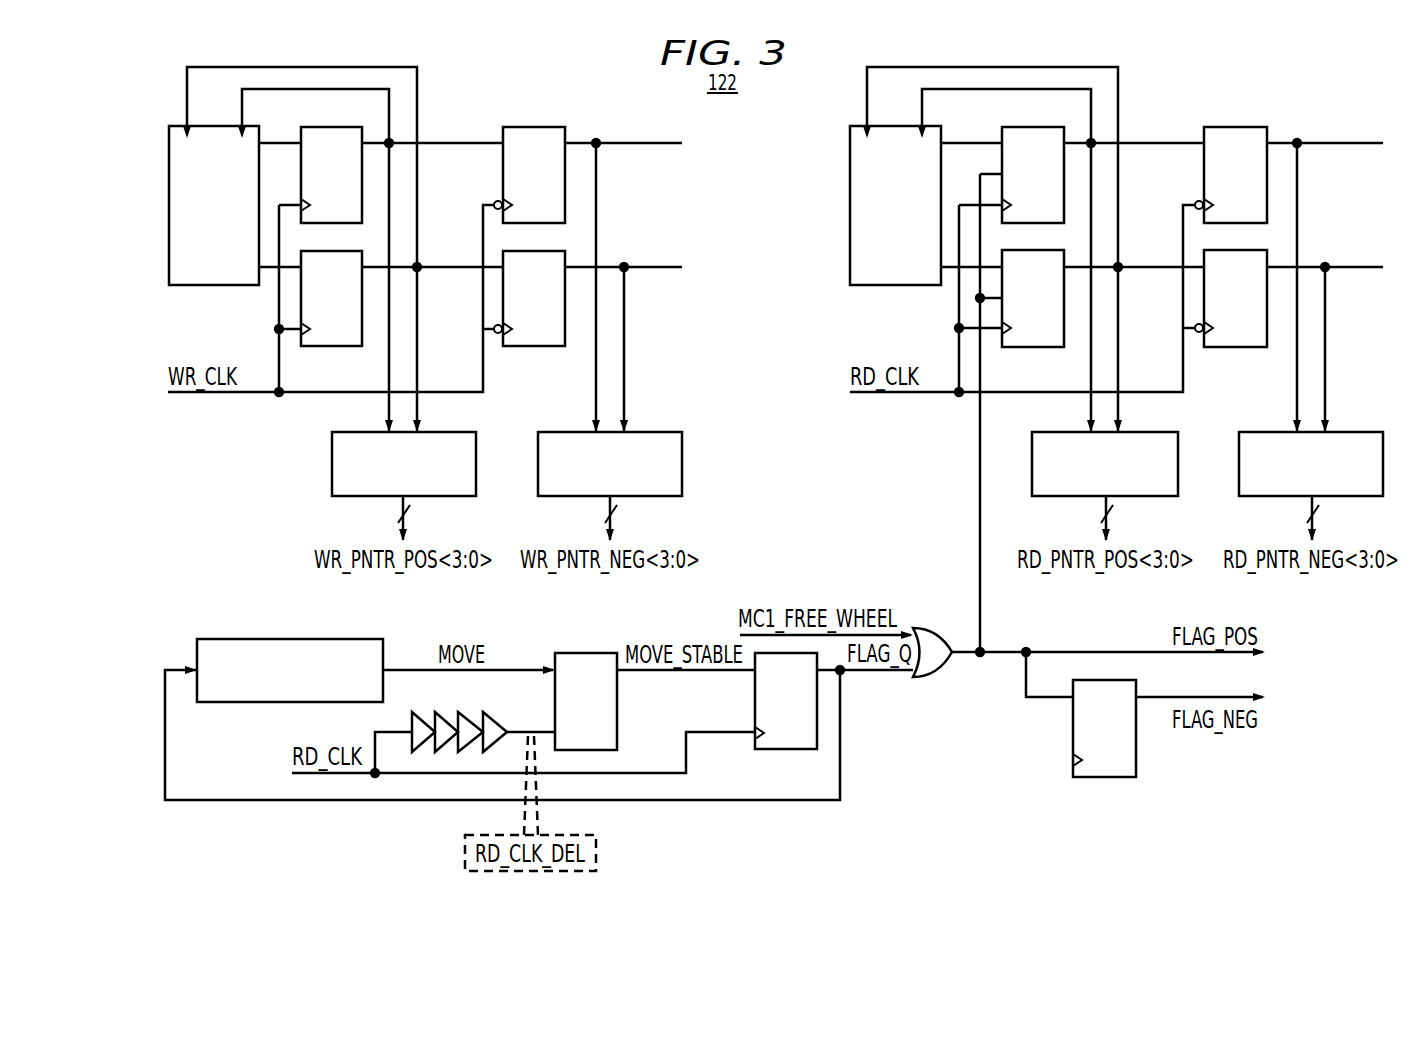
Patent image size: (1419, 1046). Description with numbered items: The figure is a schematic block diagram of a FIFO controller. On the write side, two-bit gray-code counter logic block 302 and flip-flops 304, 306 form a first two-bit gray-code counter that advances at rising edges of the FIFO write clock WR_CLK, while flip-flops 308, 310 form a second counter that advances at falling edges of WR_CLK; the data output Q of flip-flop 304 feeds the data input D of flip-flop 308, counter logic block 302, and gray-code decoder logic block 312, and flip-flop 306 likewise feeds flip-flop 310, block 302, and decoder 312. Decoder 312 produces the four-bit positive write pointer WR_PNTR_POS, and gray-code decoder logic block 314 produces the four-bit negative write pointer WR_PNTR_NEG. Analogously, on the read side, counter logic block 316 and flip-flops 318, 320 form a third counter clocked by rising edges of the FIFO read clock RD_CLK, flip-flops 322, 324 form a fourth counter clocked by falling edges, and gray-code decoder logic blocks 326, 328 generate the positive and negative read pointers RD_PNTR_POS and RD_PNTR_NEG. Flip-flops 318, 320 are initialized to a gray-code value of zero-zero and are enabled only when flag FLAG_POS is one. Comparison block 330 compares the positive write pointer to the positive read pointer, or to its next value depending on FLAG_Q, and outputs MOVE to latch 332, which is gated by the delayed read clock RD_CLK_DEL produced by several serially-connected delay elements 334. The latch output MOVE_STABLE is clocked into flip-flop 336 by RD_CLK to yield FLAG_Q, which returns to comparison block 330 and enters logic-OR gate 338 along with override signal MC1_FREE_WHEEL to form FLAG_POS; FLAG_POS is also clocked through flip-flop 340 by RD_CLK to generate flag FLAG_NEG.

The 2-bit gray-code counter logic block 302 is at (213, 125).
The flip-flop 304 is at (322, 127).
The flip-flop 306 is at (320, 346).
The flip-flop 308 is at (525, 127).
The flip-flop 310 is at (522, 346).
The gray-code decoder logic block 312 is at (447, 432).
The gray-code decoder logic block 314 is at (654, 432).
The 2-bit gray-code counter logic block 316 is at (893, 125).
The flip-flop 318 is at (1023, 127).
The flip-flop 320 is at (1021, 347).
The flip-flop 322 is at (1226, 127).
The flip-flop 324 is at (1223, 347).
The gray-code decoder logic block 326 is at (1147, 432).
The gray-code decoder logic block 328 is at (1354, 432).
The comparison block 330 is at (335, 639).
The latch 332 is at (575, 653).
The delay elements 334 is at (495, 717).
The flip-flop 336 is at (787, 749).
The logic-OR gate 338 is at (940, 668).
The flip-flop 340 is at (1105, 777).